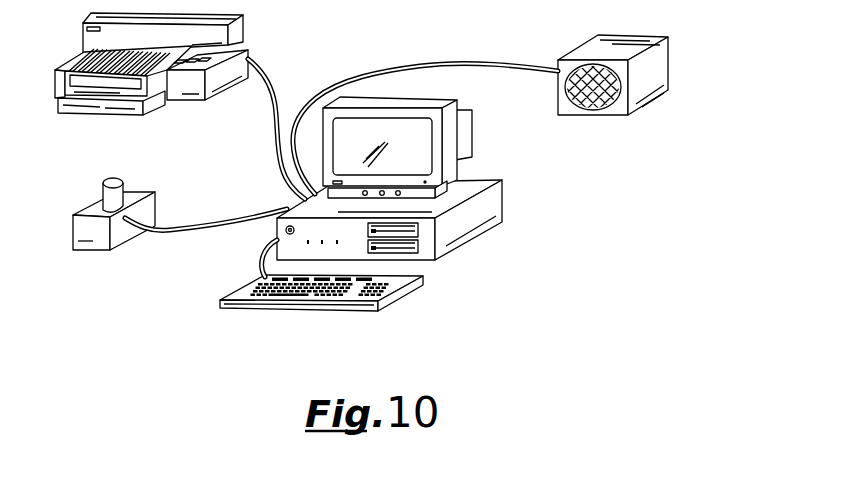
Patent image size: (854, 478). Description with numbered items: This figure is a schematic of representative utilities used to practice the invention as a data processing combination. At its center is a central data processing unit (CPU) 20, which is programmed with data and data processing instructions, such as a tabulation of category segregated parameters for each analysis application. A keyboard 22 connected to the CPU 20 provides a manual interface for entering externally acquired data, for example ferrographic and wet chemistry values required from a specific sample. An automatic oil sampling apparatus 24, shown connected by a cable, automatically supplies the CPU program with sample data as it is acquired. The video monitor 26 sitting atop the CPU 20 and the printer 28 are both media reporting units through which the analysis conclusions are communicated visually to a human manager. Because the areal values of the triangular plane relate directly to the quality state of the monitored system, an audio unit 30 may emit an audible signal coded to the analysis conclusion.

The central data processing unit 20 is at (467, 235).
The keyboard 22 is at (414, 293).
The automatic oil sampling apparatus 24 is at (128, 232).
The video monitor 26 is at (417, 104).
The printer 28 is at (196, 96).
The audio unit 30 is at (613, 112).